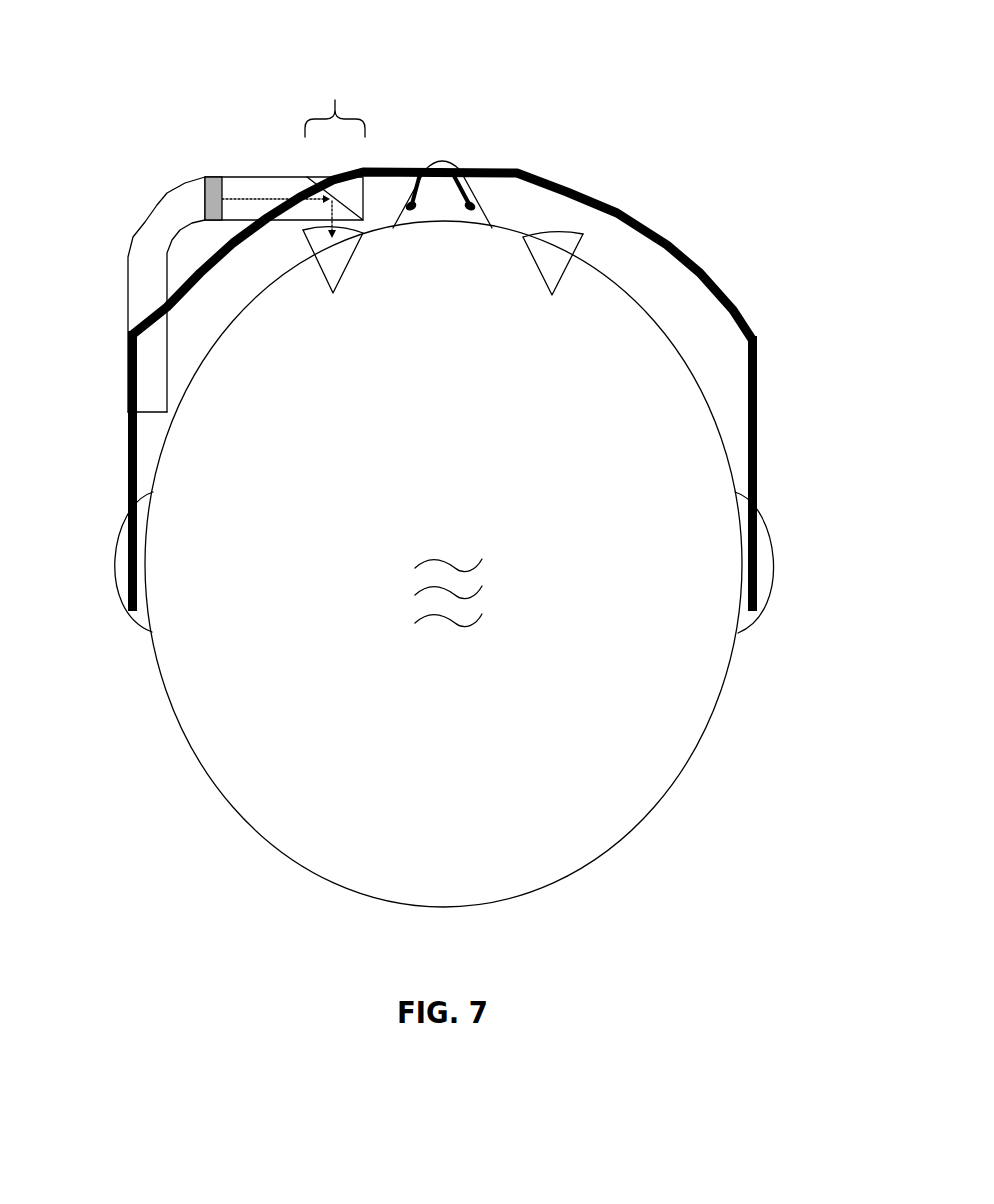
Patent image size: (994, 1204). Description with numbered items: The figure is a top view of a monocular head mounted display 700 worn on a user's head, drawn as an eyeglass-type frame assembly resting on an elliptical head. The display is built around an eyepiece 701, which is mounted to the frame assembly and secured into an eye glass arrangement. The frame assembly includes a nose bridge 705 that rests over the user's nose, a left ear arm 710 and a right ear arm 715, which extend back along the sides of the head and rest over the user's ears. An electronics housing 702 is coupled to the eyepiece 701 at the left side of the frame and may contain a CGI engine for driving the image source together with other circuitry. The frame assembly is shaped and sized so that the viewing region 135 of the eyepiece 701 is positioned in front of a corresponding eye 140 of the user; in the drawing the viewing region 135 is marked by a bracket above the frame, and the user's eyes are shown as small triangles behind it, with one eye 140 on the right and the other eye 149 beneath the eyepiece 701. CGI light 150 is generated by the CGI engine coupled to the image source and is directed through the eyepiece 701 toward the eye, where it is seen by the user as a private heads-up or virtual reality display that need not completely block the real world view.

The head mounted display 700 is at (683, 80).
The eyepiece 701 is at (260, 153).
The electronics housing 702 is at (134, 215).
The nose bridge 705 is at (472, 163).
The left ear arm 710 is at (128, 383).
The right ear arm 715 is at (757, 392).
The CGI light 150 is at (247, 197).
The viewing region 135 is at (336, 91).
The left eye 149 is at (340, 283).
The eye 140 is at (532, 258).